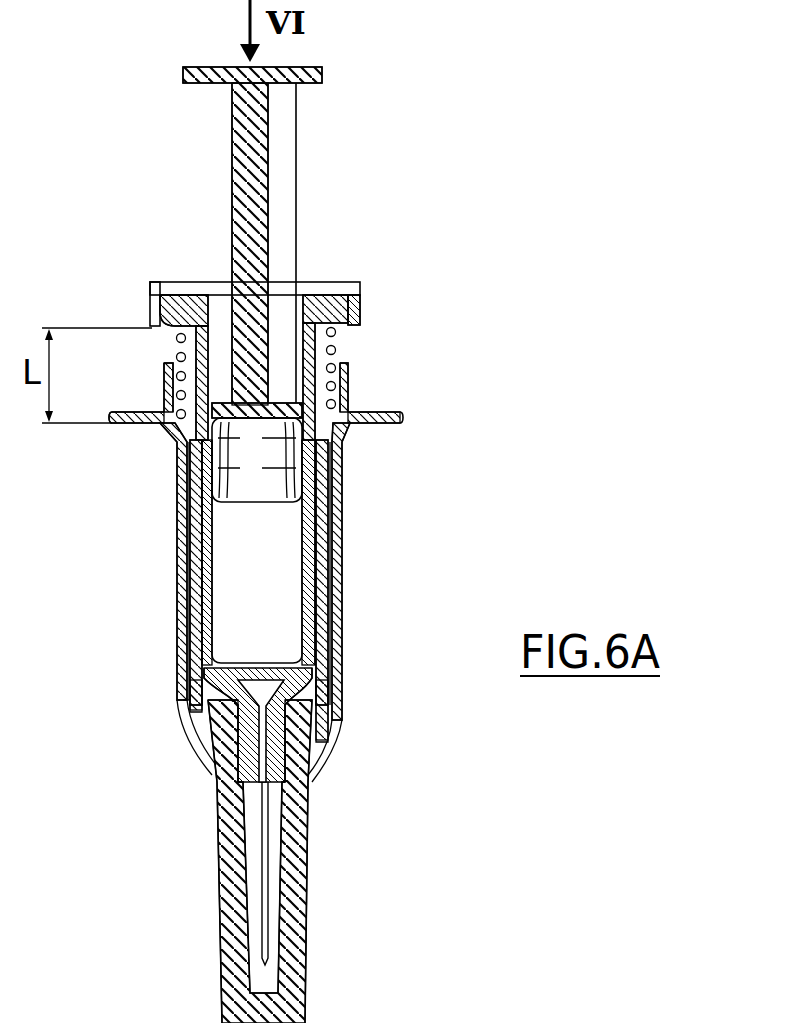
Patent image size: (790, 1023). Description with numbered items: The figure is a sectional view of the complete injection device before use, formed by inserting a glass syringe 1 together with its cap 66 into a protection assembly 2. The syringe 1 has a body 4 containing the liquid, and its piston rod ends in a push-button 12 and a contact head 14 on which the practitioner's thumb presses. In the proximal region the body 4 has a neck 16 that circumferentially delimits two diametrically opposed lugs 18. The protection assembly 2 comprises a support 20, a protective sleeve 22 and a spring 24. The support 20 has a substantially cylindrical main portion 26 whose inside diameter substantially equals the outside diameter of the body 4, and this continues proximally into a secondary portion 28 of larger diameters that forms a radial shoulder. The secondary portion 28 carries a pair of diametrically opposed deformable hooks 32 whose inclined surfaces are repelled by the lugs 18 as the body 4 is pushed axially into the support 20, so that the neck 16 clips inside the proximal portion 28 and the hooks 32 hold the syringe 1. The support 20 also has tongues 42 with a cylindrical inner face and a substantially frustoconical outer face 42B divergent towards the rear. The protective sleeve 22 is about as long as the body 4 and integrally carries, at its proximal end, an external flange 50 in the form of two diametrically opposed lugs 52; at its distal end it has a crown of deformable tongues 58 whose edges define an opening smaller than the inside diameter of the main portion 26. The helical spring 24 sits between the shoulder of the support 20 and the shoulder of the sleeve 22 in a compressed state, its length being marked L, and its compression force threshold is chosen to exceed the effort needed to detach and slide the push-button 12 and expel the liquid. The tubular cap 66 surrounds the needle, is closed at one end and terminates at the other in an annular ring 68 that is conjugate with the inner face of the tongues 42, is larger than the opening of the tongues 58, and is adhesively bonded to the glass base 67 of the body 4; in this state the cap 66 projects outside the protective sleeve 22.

The syringe 1 is at (312, 184).
The protection assembly 2 is at (82, 722).
The body 4 is at (180, 575).
The push-button 12 is at (252, 495).
The contact head 14 is at (303, 74).
The neck 16 is at (168, 304).
The lugs 18 is at (260, 329).
The support 20 is at (346, 556).
The protective sleeve 22 is at (346, 662).
The spring 24 is at (336, 345).
The main portion 26 is at (334, 626).
The secondary portion 28 is at (352, 318).
The deformable hooks 32 is at (338, 288).
The tongues 42 is at (342, 702).
The outer face 42B is at (196, 706).
The external flange 50 is at (297, 539).
The lugs 52 is at (126, 412).
The deformable tongues 58 is at (200, 748).
The cap 66 is at (322, 962).
The glass base 67 is at (294, 770).
The annular ring 68 is at (300, 720).